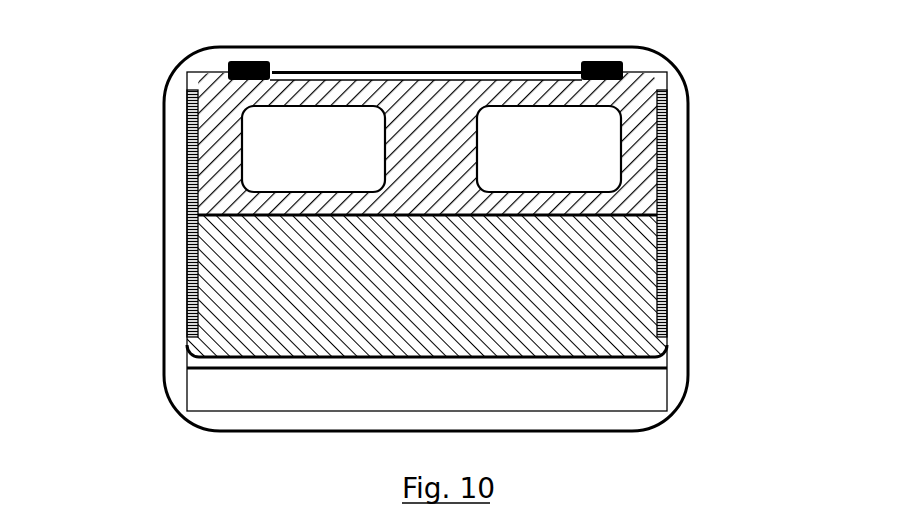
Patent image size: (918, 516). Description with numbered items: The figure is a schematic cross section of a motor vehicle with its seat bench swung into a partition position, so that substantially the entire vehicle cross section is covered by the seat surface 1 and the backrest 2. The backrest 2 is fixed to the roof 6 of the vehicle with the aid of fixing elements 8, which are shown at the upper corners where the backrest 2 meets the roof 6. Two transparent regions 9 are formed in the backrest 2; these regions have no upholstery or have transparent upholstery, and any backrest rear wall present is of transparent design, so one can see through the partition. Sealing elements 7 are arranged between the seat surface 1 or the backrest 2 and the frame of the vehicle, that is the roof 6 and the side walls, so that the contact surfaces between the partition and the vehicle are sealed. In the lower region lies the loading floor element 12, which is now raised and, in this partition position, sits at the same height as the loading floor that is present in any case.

The seat surface 1 is at (553, 290).
The backrest 2 is at (633, 194).
The roof 6 is at (390, 55).
The sealing elements 7 is at (523, 70).
The fixing elements 8 is at (255, 60).
The transparent regions 9 is at (280, 140).
The loading floor element 12 is at (547, 362).